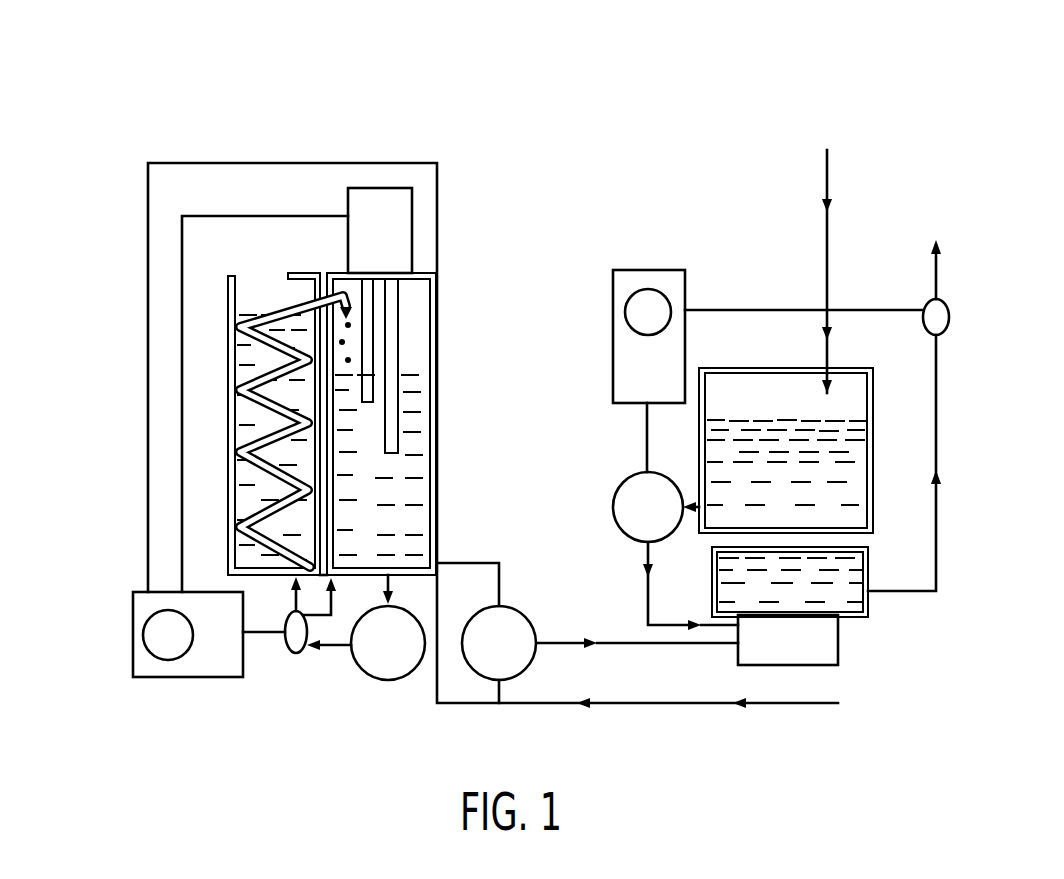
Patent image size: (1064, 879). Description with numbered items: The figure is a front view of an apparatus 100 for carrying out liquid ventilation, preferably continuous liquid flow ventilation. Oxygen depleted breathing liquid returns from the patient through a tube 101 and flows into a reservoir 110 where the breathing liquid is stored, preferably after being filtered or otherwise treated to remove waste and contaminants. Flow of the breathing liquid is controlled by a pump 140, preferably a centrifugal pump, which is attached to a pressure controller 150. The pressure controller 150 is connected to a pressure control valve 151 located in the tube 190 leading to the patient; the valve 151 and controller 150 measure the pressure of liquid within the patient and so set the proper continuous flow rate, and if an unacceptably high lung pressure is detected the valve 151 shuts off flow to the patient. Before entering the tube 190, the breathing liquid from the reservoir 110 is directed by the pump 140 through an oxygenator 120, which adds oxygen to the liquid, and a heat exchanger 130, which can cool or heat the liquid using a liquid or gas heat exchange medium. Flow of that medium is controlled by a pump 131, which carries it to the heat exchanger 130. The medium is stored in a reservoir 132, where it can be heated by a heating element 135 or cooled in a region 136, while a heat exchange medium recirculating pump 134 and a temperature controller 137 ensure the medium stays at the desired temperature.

The apparatus 100 is at (380, 104).
The tube 101 is at (828, 232).
The reservoir 110 is at (873, 400).
The oxygenator 120 is at (868, 567).
The heat exchanger 130 is at (838, 667).
The pump 131 is at (510, 607).
The reservoir 132 is at (438, 317).
The heat exchange medium recirculating pump 134 is at (368, 677).
The heating element 135 is at (412, 207).
The region 136 is at (230, 423).
The temperature controller 137 is at (133, 648).
The pump 140 is at (675, 551).
The pressure controller 150 is at (660, 268).
The valve 151 is at (949, 313).
The tube 190 is at (941, 243).